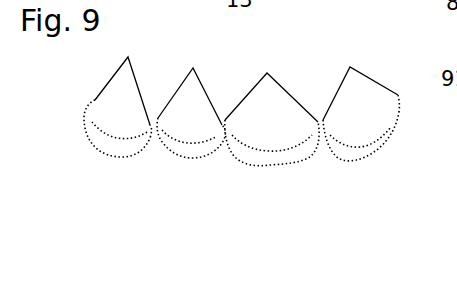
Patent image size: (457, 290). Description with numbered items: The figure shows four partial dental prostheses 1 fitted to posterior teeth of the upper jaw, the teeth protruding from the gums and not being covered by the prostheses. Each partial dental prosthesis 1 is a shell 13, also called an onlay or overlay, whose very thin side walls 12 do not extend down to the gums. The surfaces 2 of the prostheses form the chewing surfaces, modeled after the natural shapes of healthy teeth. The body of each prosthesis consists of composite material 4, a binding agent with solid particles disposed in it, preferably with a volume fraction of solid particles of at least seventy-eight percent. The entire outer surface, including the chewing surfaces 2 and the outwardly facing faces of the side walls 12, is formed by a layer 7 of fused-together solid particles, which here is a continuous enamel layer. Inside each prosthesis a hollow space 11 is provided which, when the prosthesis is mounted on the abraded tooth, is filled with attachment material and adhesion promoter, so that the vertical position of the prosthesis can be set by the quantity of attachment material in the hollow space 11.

The partial dental prosthesis 1 is at (97, 163).
The surface forming the chewing surface 2 is at (177, 140).
The composite material 4 is at (100, 147).
The layer 7 is at (114, 152).
The hollow space 11 is at (103, 118).
The side wall 12 is at (246, 78).
The shell 13 is at (98, 150).